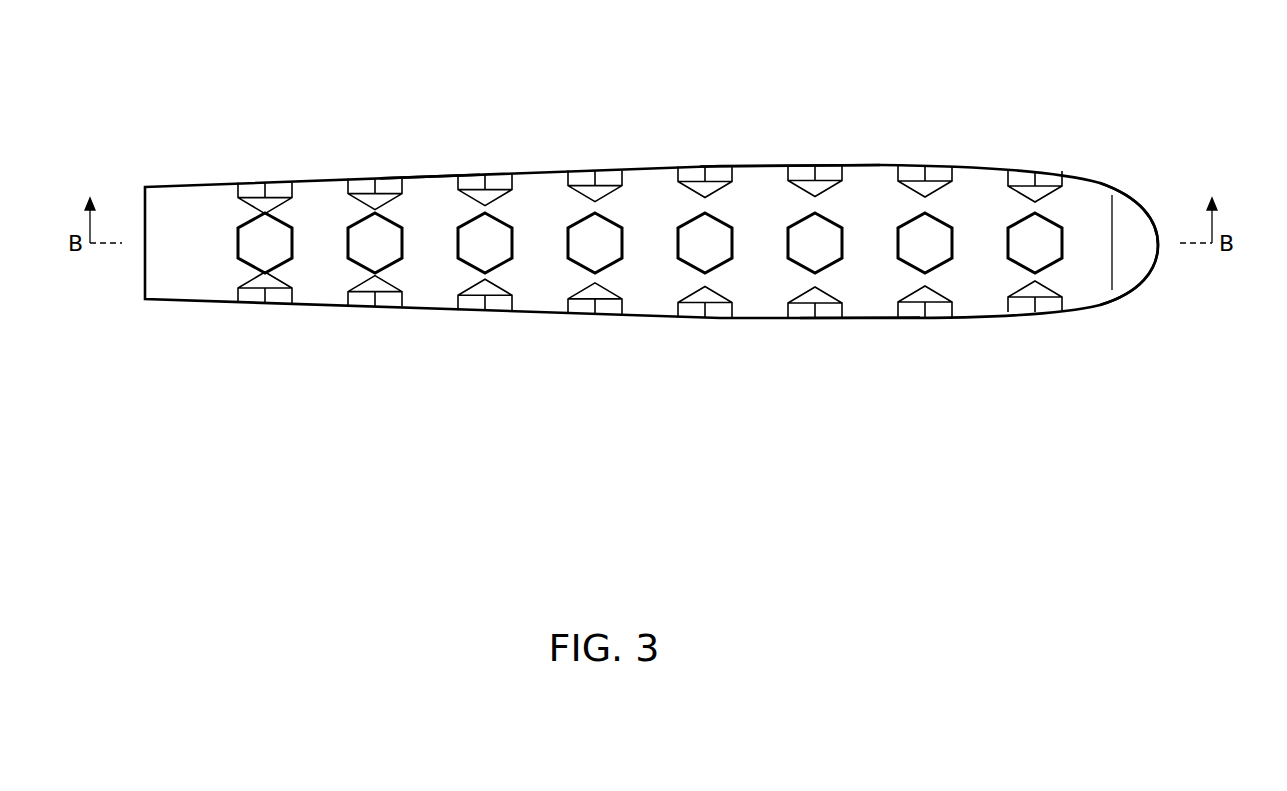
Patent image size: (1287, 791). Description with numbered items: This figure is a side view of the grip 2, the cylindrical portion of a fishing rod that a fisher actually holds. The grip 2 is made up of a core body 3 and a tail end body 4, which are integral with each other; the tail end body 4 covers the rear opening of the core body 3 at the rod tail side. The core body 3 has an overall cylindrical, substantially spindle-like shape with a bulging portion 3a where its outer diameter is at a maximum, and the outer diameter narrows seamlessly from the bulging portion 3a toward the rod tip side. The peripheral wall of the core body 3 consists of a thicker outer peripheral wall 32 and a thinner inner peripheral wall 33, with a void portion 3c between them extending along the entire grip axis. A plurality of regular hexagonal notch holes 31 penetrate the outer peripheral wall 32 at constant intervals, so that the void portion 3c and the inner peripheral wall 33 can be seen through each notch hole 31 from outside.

The grip 2 is at (683, 218).
The core body 3 is at (747, 165).
The bulging portion 3a is at (775, 162).
The void portion 3c is at (868, 278).
The notch hole 31 is at (572, 243).
The outer peripheral wall 32 is at (432, 205).
The inner peripheral wall 33 is at (713, 243).
The tail end body 4 is at (1140, 252).